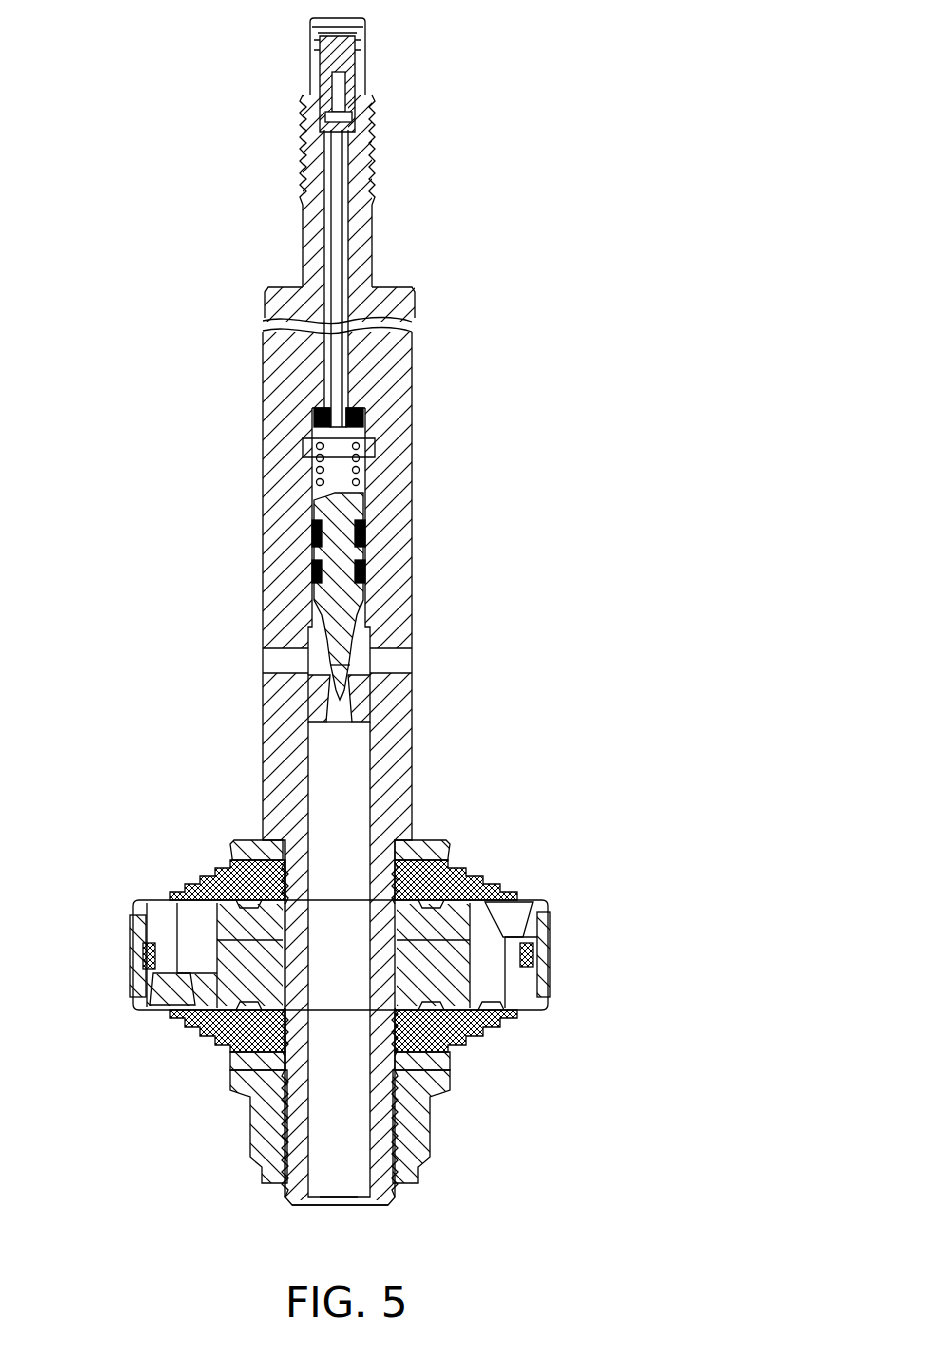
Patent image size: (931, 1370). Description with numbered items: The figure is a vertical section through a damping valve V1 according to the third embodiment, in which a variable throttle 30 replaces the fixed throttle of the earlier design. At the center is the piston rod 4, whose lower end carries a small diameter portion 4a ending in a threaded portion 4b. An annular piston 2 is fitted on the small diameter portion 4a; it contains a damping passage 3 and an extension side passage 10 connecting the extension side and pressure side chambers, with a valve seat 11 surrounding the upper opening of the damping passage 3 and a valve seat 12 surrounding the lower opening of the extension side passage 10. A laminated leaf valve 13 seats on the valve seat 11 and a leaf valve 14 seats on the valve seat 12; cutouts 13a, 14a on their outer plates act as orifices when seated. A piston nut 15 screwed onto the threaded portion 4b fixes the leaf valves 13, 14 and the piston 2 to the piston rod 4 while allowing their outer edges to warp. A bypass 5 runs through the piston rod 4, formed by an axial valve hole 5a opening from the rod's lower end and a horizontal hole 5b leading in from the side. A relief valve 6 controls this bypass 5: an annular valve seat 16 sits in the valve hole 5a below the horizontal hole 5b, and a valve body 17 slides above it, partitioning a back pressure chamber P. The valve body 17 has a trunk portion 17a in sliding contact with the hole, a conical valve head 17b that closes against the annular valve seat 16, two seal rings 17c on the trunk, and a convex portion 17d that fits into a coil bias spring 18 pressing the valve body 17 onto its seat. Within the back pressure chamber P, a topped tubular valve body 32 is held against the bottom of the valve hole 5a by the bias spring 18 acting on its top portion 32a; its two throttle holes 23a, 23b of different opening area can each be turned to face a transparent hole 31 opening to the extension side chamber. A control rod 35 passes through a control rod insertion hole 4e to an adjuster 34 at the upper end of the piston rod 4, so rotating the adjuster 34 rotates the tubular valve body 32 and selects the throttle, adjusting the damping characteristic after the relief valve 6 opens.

The piston 2 is at (548, 900).
The damping passage 3 is at (190, 950).
The piston rod 4 is at (263, 355).
The small diameter portion 4a is at (450, 970).
The threaded portion 4b is at (398, 1152).
The control rod insertion hole 4e is at (344, 234).
The bypass 5 is at (310, 1078).
The valve hole 5a is at (358, 805).
The horizontal hole 5b is at (285, 660).
The relief valve 6 is at (318, 730).
The extension side passage 10 is at (490, 946).
The valve seat 11 is at (170, 905).
The valve seat 12 is at (480, 1012).
The leaf valve 13 is at (255, 850).
The cutout 13a is at (178, 898).
The leaf valve 14 is at (470, 1035).
The cutout 14a is at (472, 1030).
The piston nut 15 is at (415, 1120).
The annular valve seat 16 is at (362, 700).
The valve body 17 is at (367, 610).
The trunk portion 17a is at (312, 568).
The valve head 17b is at (334, 690).
The seal ring 17c is at (362, 566).
The convex portion 17d is at (312, 530).
The bias spring 18 is at (358, 520).
The throttle hole 23a is at (377, 433).
The throttle hole 23b is at (306, 452).
The variable throttle 30 is at (362, 420).
The transparent hole 31 is at (370, 455).
The tubular valve body 32 is at (322, 480).
The top portion 32a is at (318, 412).
The adjuster 34 is at (352, 60).
The control rod 35 is at (338, 353).
The back pressure chamber P is at (318, 427).
The damping valve V1 is at (262, 735).